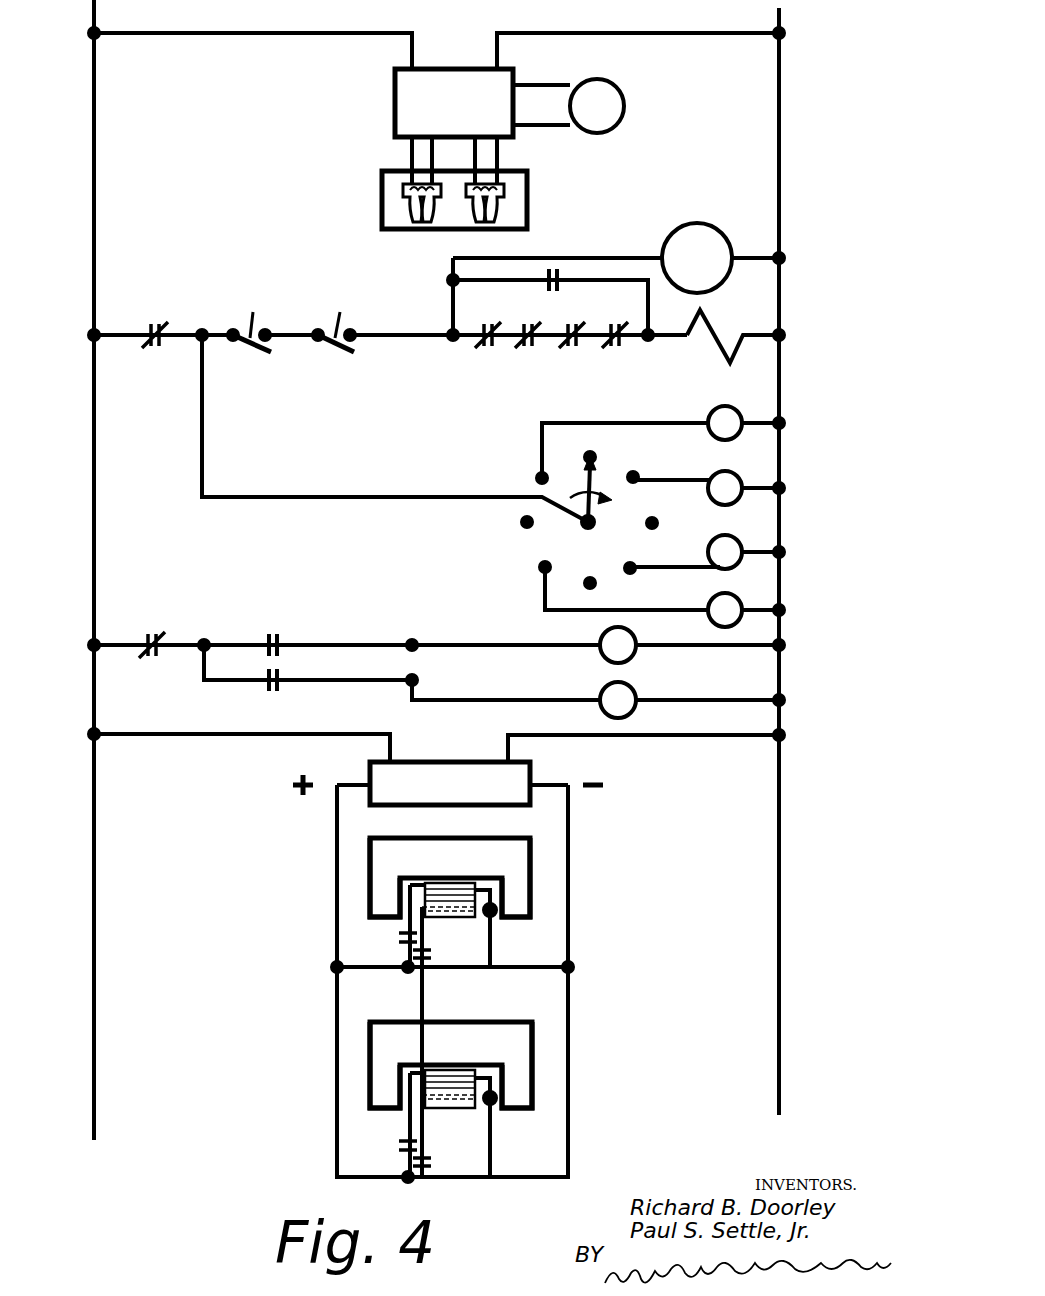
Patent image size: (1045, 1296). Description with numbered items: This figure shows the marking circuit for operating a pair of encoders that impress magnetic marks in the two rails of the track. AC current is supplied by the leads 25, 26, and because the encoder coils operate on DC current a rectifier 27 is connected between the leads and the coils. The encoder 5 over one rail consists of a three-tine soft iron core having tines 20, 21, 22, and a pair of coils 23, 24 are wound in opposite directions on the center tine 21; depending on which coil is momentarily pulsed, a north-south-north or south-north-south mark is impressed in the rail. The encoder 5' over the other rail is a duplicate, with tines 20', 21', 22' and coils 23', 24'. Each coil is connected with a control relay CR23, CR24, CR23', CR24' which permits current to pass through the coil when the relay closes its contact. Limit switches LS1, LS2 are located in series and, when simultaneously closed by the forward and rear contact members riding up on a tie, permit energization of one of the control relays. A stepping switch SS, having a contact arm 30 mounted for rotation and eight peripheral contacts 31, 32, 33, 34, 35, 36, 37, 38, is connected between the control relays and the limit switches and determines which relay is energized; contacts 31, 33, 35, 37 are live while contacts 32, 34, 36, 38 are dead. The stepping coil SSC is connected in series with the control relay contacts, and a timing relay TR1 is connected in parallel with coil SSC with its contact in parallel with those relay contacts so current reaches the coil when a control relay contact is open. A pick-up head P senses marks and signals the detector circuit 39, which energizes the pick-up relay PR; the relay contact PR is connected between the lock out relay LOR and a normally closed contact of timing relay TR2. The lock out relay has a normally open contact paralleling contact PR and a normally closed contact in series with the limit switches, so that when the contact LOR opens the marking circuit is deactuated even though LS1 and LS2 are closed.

The lead 25 is at (94, 180).
The lead 26 is at (779, 182).
The detector circuit 39 is at (472, 118).
The pick-up head P is at (514, 201).
The pick-up relay PR is at (614, 121).
The timing relay TR1 is at (718, 272).
The stepping coil SSC is at (758, 328).
The lock out relay LOR is at (154, 322).
The limit switch LS2 is at (245, 318).
The limit switch LS1 is at (332, 318).
The control relay CR23 is at (518, 637).
The control relay CR24 is at (596, 665).
The control relay CR23' is at (518, 738).
The control relay CR24' is at (598, 770).
The stepping switch SS is at (461, 472).
The contact arm 30 is at (600, 496).
The peripheral contact 31 is at (538, 478).
The peripheral contact 32 is at (589, 452).
The peripheral contact 33 is at (634, 473).
The peripheral contact 34 is at (651, 518).
The peripheral contact 35 is at (630, 562).
The peripheral contact 36 is at (595, 585).
The peripheral contact 37 is at (540, 567).
The peripheral contact 38 is at (522, 523).
The timing relay TR2 is at (153, 632).
The rectifier 27 is at (468, 800).
The encoder 5 is at (446, 994).
The tine 20 is at (336, 877).
The tine 22 is at (561, 877).
The coil 23 is at (457, 864).
The coil 24 is at (450, 1042).
The tine 21 is at (504, 928).
The encoder 5' is at (449, 1099).
The tine 20' is at (336, 1065).
The tine 22' is at (564, 1065).
The coil 23' is at (457, 1069).
The coil 24' is at (450, 1136).
The tine 21' is at (507, 1127).